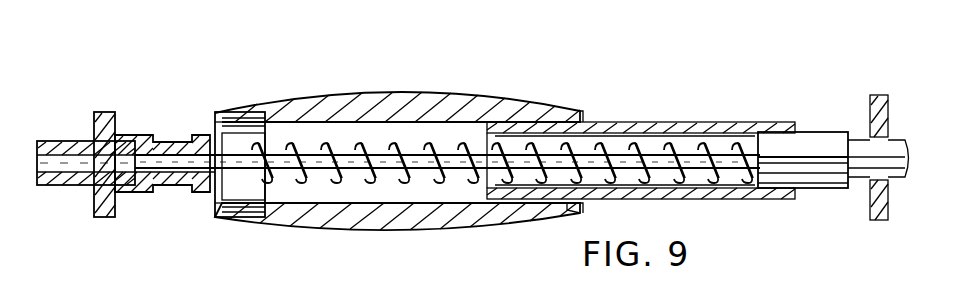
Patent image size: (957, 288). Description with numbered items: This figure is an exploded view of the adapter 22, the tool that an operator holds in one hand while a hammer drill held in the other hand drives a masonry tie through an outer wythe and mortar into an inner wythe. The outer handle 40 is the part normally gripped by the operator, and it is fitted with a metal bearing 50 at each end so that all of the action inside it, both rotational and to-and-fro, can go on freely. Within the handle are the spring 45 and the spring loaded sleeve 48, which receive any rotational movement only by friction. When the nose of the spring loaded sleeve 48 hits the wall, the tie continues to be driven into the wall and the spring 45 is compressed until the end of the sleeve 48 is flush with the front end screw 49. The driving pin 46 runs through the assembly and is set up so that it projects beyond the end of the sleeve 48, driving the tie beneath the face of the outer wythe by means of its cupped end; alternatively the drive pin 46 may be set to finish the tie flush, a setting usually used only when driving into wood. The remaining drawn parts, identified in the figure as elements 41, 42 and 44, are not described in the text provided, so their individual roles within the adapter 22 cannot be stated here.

The adapter 22 is at (468, 90).
The outer handle 40 is at (530, 100).
The sleeve 41 is at (715, 120).
The piston 42 is at (810, 128).
The end flange 44 is at (872, 217).
The spring 45 is at (413, 183).
The driving pin 46 is at (477, 178).
The spring loaded sleeve 48 is at (172, 194).
The front end screw 49 is at (130, 137).
The metal bearing 50 is at (243, 147).